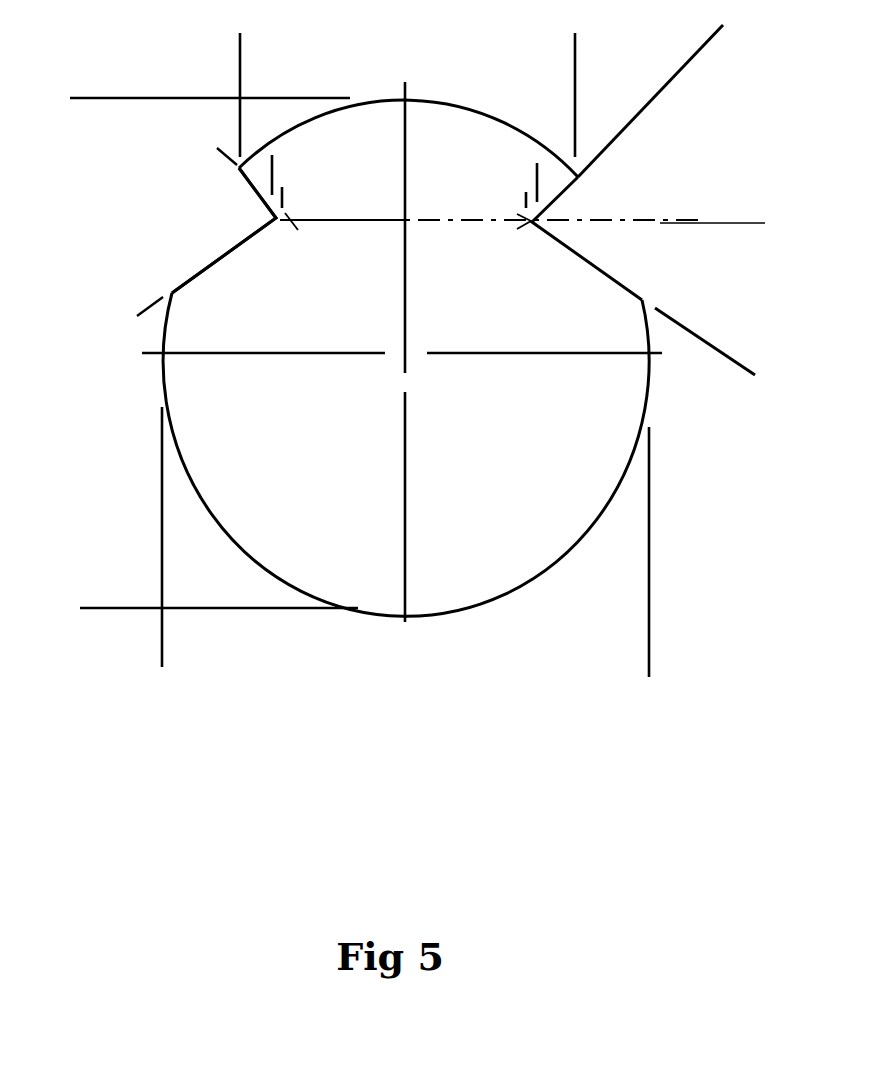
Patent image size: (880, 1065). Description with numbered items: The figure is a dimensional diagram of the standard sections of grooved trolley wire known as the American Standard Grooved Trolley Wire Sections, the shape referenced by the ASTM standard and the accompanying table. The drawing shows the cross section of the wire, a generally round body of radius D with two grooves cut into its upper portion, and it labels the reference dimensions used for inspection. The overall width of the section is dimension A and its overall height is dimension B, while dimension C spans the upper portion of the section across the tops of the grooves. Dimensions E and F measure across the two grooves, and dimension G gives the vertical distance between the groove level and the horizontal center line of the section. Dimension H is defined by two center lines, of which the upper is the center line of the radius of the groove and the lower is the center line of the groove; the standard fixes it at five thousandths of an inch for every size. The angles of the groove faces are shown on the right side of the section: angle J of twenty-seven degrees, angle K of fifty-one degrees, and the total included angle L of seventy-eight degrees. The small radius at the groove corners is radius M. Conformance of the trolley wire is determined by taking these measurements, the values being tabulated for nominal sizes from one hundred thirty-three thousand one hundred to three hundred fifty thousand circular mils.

The width dimension A is at (649, 655).
The height dimension B is at (84, 98).
The upper section width dimension C is at (575, 43).
The radius D is at (255, 552).
The groove width dimension E is at (533, 170).
The groove spacing dimension F is at (282, 200).
The groove offset dimension G is at (335, 221).
The center line offset dimension H is at (672, 270).
The lower groove angle J is at (729, 225).
The upper groove angle K is at (671, 83).
The included groove angle L is at (752, 359).
The groove radius M is at (270, 215).